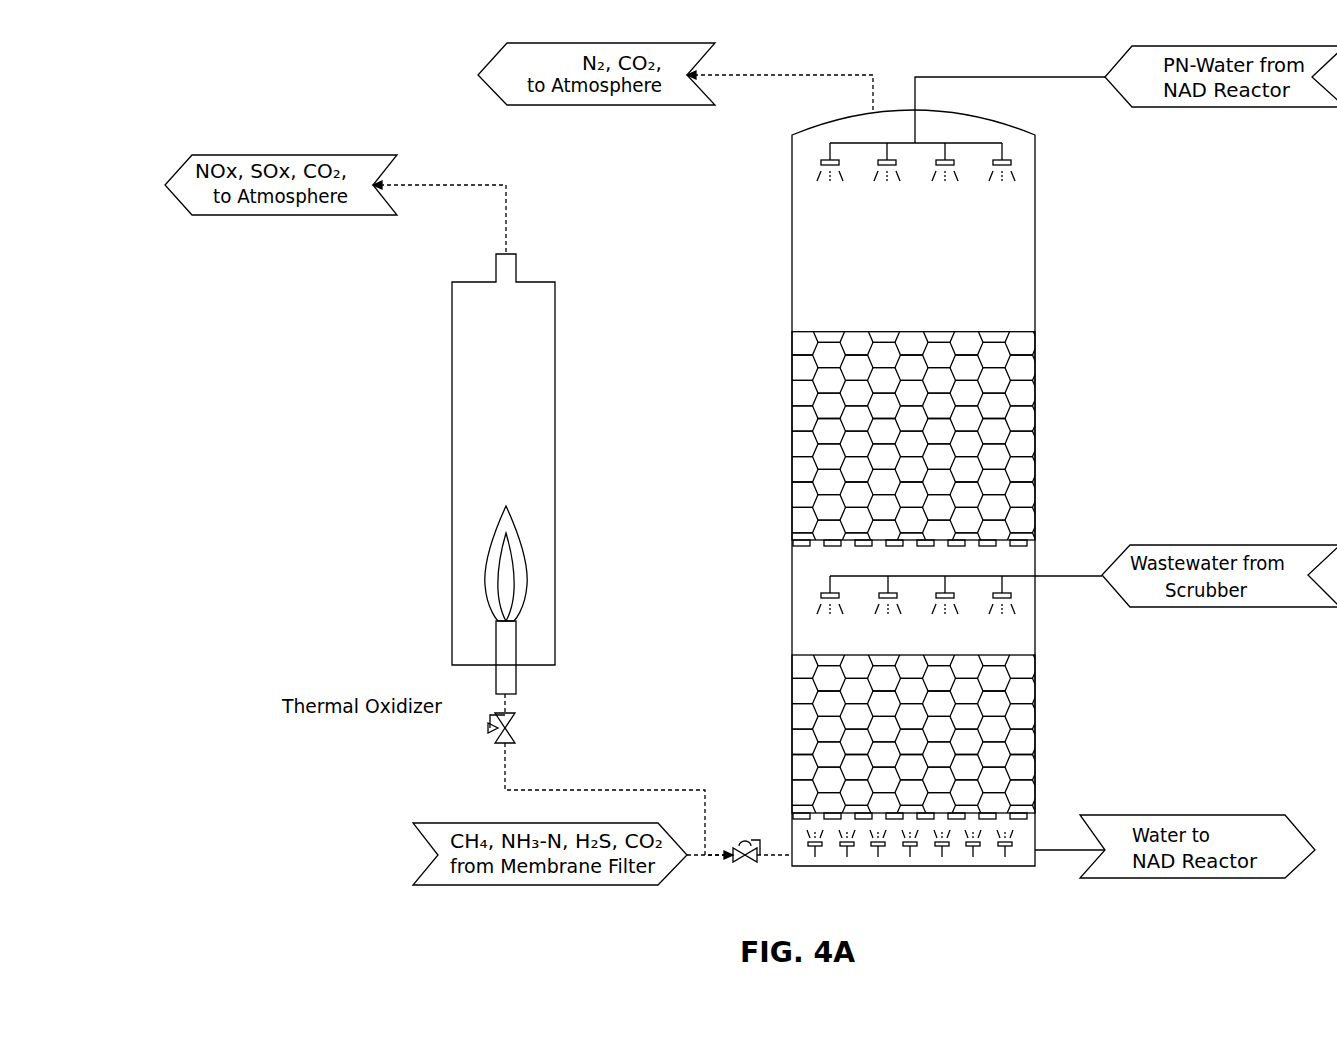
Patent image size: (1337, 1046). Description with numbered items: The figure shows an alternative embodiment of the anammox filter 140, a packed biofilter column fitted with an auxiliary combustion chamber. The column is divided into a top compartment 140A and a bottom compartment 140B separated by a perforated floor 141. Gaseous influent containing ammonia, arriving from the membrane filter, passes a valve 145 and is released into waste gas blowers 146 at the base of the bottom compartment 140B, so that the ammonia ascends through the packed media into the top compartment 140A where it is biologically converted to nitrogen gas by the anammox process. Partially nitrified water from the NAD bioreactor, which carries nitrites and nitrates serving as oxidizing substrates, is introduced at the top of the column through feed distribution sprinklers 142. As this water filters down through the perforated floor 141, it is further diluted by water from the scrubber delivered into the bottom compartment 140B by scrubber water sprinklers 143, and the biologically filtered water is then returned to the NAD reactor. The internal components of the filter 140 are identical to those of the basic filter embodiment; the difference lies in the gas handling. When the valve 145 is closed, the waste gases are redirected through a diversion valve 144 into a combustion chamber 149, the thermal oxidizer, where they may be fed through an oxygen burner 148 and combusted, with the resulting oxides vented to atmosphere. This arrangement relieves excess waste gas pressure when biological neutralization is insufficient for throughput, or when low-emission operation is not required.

The anammox filter 140 is at (1147, 370).
The top compartment 140A is at (1007, 353).
The bottom compartment 140B is at (1007, 740).
The perforated floor 141 is at (988, 540).
The feed distribution sprinklers 142 is at (952, 162).
The scrubber water sprinklers 143 is at (823, 593).
The diversion valve 144 is at (515, 728).
The valve 145 is at (745, 843).
The waste gas blowers 146 is at (917, 846).
The oxygen burner 148 is at (497, 648).
The combustion chamber 149 is at (530, 412).